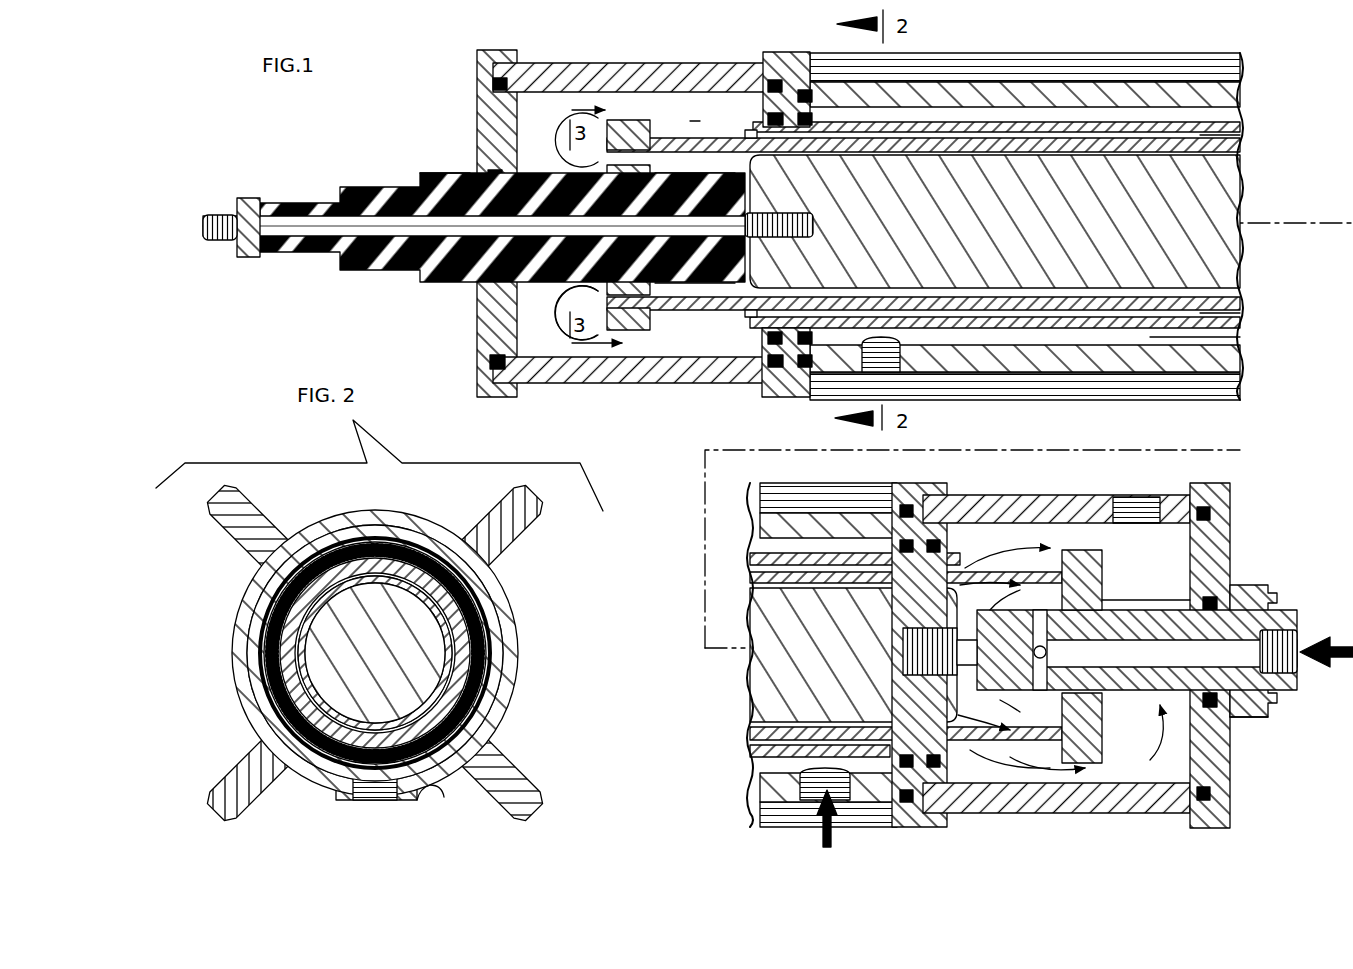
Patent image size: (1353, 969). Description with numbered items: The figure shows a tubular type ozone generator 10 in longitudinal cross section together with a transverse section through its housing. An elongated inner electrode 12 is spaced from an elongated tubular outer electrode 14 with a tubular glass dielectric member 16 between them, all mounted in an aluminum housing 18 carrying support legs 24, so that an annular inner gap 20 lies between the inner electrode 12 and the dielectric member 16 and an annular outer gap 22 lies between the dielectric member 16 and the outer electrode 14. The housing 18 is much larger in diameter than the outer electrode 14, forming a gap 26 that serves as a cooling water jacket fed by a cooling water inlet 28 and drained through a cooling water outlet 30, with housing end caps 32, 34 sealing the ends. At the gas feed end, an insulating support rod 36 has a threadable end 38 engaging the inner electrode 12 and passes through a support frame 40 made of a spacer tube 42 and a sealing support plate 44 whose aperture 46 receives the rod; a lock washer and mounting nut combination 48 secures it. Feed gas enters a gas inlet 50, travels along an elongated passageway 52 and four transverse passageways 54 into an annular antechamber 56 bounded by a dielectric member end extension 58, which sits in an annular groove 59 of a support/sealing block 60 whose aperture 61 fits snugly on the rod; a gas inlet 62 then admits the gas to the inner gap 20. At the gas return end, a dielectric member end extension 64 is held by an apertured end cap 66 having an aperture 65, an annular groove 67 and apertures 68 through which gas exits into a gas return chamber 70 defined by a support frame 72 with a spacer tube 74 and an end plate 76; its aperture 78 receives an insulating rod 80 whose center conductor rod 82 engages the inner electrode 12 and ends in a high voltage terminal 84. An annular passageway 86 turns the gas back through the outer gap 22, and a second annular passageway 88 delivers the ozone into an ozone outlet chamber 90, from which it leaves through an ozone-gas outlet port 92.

In FIG. 1, the tubular type ozone generator 10 is at (422, 118).
In FIG. 1, the inner electrode 12 is at (1230, 218).
In FIG. 2, the inner electrode 12 is at (429, 633).
In FIG. 1, the outer electrode 14 is at (1243, 128).
In FIG. 2, the outer electrode 14 is at (475, 637).
In FIG. 1, the dielectric member 16 is at (1243, 150).
In FIG. 2, the dielectric member 16 is at (456, 656).
In FIG. 1, the housing 18 is at (1022, 85).
In FIG. 2, the housing 18 is at (351, 514).
In FIG. 1, the inner gap 20 is at (1243, 160).
In FIG. 2, the inner gap 20 is at (452, 676).
In FIG. 1, the outer gap 22 is at (1243, 146).
In FIG. 2, the outer gap 22 is at (452, 711).
In FIG. 1, the support legs 24 is at (1225, 50).
In FIG. 2, the support legs 24 is at (233, 535).
In FIG. 1, the gap 26 is at (1225, 337).
In FIG. 2, the gap 26 is at (429, 792).
In FIG. 1, the cooling water inlet 28 is at (848, 805).
In FIG. 1, the cooling water outlet 30 is at (893, 375).
In FIG. 2, the cooling water outlet 30 is at (378, 804).
In FIG. 1, the housing end cap 32 is at (945, 830).
In FIG. 1, the housing end cap 34 is at (770, 395).
In FIG. 1, the support rod 36 is at (1165, 615).
In FIG. 1, the threadable end 38 is at (900, 640).
In FIG. 1, the support frame 40 is at (1100, 815).
In FIG. 1, the spacer tube 42 is at (985, 496).
In FIG. 1, the sealing support plate 44 is at (1230, 500).
In FIG. 1, the aperture 46 is at (1232, 735).
In FIG. 1, the lock washer and mounting nut combination 48 is at (1262, 585).
In FIG. 1, the gas inlet 50 is at (1300, 628).
In FIG. 1, the elongated passageway 52 is at (1190, 650).
In FIG. 1, the transverse passageways 54 is at (1048, 652).
In FIG. 1, the antechamber 56 is at (1055, 608).
In FIG. 1, the dielectric member end extension 58 is at (1052, 762).
In FIG. 1, the annular groove 59 is at (1100, 575).
In FIG. 1, the support/sealing block 60 is at (1103, 712).
In FIG. 1, the aperture 61 is at (1102, 612).
In FIG. 1, the gas inlet 62 is at (965, 592).
In FIG. 1, the dielectric member end extension 64 is at (670, 298).
In FIG. 1, the aperture 65 is at (657, 280).
In FIG. 1, the apertured end cap 66 is at (607, 300).
In FIG. 1, the annular groove 67 is at (607, 157).
In FIG. 1, the apertures 68 is at (657, 173).
In FIG. 1, the gas return chamber 70 is at (695, 123).
In FIG. 1, the support frame 72 is at (610, 385).
In FIG. 1, the spacer tube 74 is at (650, 63).
In FIG. 1, the end plate 76 is at (477, 93).
In FIG. 1, the aperture 78 is at (455, 178).
In FIG. 1, the insulating rod 80 is at (445, 265).
In FIG. 1, the center conductor rod 82 is at (283, 245).
In FIG. 1, the high voltage terminal 84 is at (215, 215).
In FIG. 1, the annular passageway 86 is at (745, 134).
In FIG. 1, the second annular passageway 88 is at (965, 568).
In FIG. 1, the ozone outlet chamber 90 is at (1080, 548).
In FIG. 1, the ozone-gas outlet port 92 is at (1137, 497).